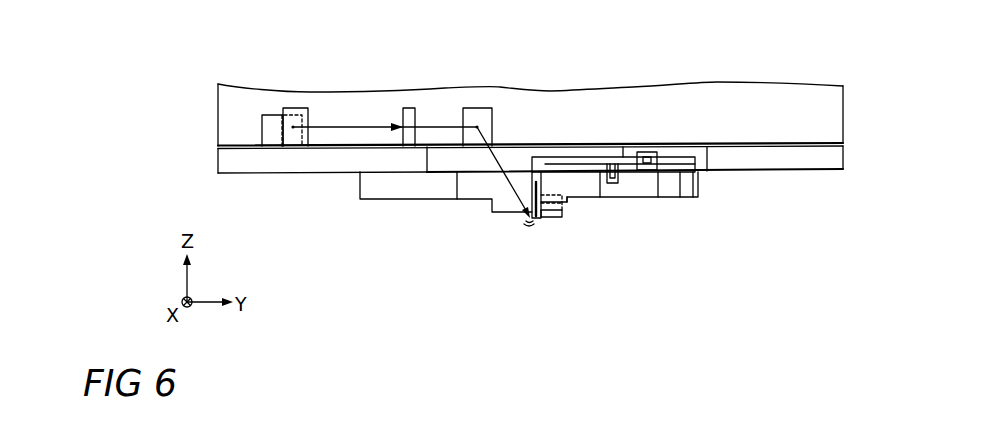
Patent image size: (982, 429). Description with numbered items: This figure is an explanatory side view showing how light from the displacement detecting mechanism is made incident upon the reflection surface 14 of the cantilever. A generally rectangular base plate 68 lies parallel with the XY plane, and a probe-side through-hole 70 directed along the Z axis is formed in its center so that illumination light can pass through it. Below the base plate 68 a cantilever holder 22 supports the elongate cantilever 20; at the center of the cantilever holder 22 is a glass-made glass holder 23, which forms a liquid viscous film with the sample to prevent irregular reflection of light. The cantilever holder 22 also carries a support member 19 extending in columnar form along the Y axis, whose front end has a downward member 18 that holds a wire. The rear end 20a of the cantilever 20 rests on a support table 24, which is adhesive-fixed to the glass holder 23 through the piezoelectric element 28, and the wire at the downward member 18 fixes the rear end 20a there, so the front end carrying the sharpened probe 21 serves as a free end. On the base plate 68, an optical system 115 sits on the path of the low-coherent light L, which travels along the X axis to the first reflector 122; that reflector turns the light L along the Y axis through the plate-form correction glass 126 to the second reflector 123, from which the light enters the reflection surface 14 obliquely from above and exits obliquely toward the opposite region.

The reflection surface 14 is at (528, 225).
The downward member 18 is at (532, 183).
The support member 19 is at (673, 153).
The cantilever 20 is at (537, 220).
The rear end 20a is at (548, 212).
The probe 21 is at (529, 228).
The cantilever holder 22 is at (377, 192).
The glass holder 23 is at (467, 192).
The support table 24 is at (560, 215).
The piezoelectric element 28 is at (567, 202).
The base plate 68 is at (797, 142).
The probe-side through-hole 70 is at (427, 158).
The optical system 115 is at (298, 110).
The first reflector 122 is at (272, 120).
The second reflector 123 is at (483, 117).
The correction glass 126 is at (410, 108).
The low-coherent light L is at (438, 124).